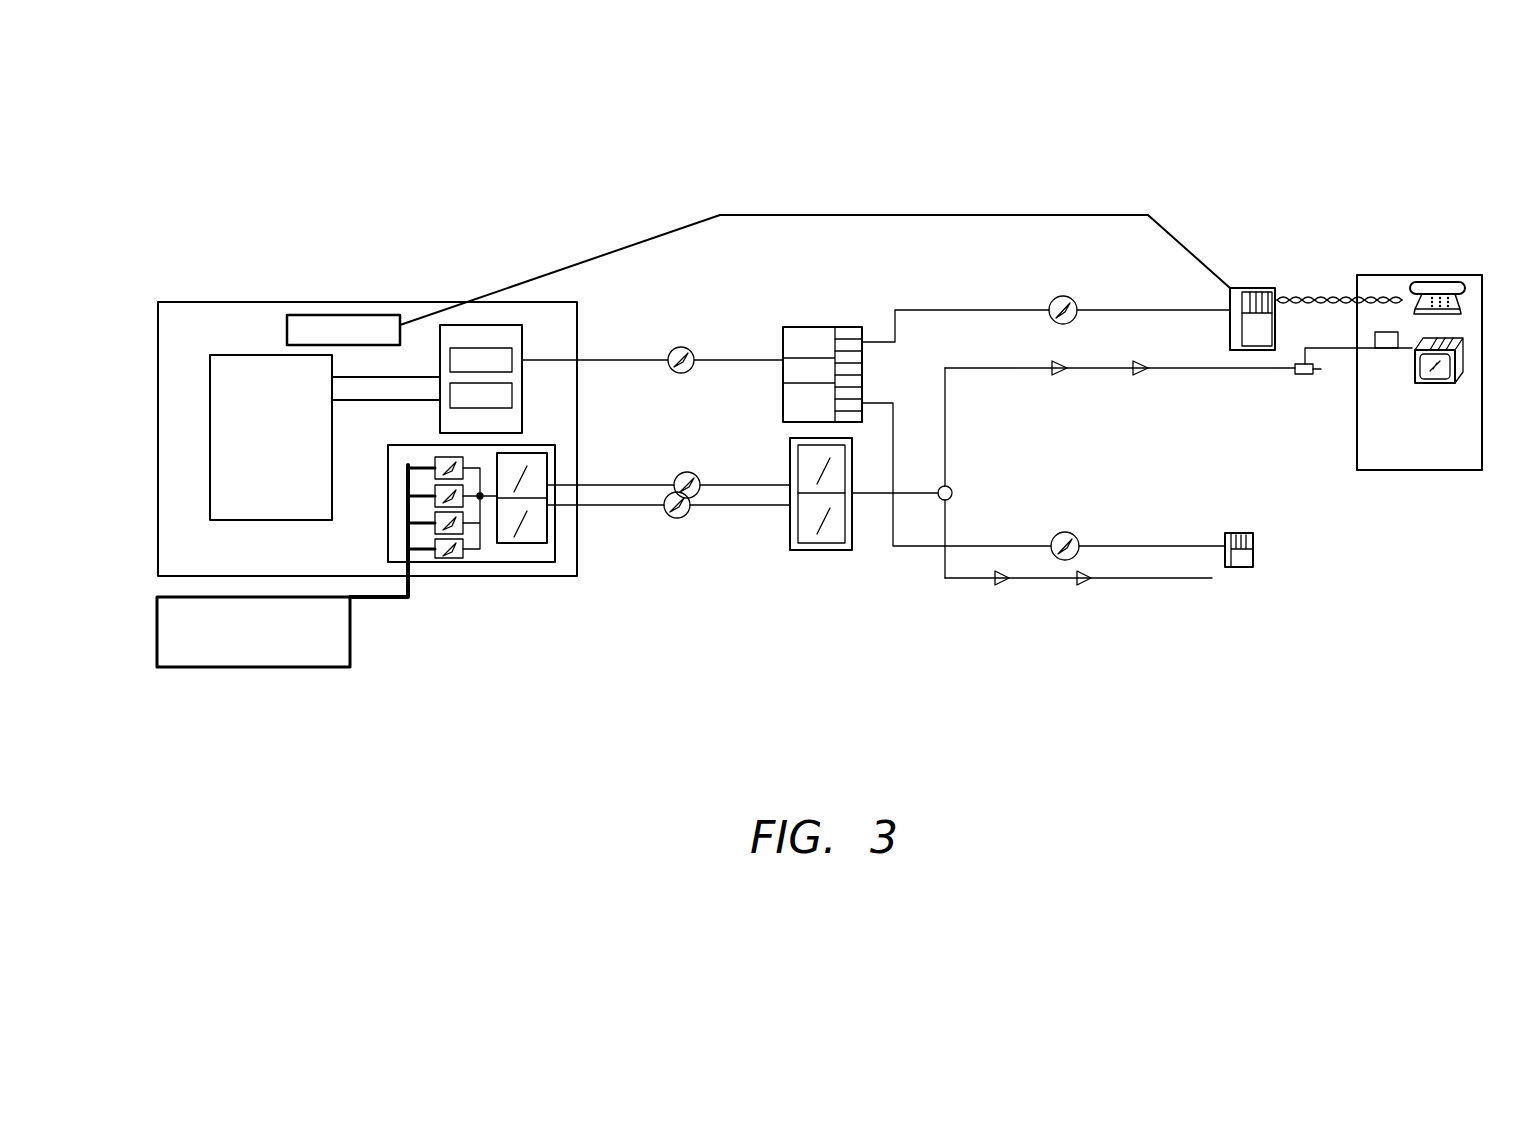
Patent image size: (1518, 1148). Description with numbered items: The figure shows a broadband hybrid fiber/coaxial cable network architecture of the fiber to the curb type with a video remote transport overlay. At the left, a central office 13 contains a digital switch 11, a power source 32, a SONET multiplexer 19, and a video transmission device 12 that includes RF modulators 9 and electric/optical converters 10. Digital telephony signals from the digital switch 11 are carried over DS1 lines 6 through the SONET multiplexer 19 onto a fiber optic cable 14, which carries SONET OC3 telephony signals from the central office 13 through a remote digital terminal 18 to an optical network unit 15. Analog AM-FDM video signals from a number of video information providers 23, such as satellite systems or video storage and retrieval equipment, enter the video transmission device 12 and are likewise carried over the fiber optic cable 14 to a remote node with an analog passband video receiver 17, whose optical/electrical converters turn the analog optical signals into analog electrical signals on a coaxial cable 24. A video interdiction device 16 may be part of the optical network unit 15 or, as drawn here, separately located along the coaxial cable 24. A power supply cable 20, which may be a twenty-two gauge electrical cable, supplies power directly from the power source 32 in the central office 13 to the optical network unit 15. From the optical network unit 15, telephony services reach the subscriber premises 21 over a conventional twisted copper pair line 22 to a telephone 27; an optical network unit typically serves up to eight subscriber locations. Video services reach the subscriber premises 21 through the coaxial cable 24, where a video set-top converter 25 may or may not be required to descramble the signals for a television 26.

The DS1 lines 6 is at (386, 400).
The RF modulators 9 is at (455, 558).
The electric/optical converters 10 is at (518, 543).
The digital switch 11 is at (255, 372).
The video transmission device 12 is at (538, 563).
The central office 13 is at (398, 302).
The fiber optic cable 14 is at (613, 365).
The optical network unit 15 is at (1230, 300).
The video interdiction device 16 is at (1290, 375).
The analog passband video receiver 17 is at (813, 552).
The remote digital terminal 18 is at (783, 341).
The SONET multiplexer 19 is at (522, 333).
The power supply cable 20 is at (933, 214).
The subscriber premises 21 is at (1418, 472).
The twisted copper pair line 22 is at (1387, 297).
The video information providers 23 is at (232, 668).
The coaxial cable 24 is at (1223, 372).
The video set-top converter 25 is at (1388, 348).
The television 26 is at (1440, 385).
The telephone 27 is at (1465, 282).
The power source 32 is at (373, 315).